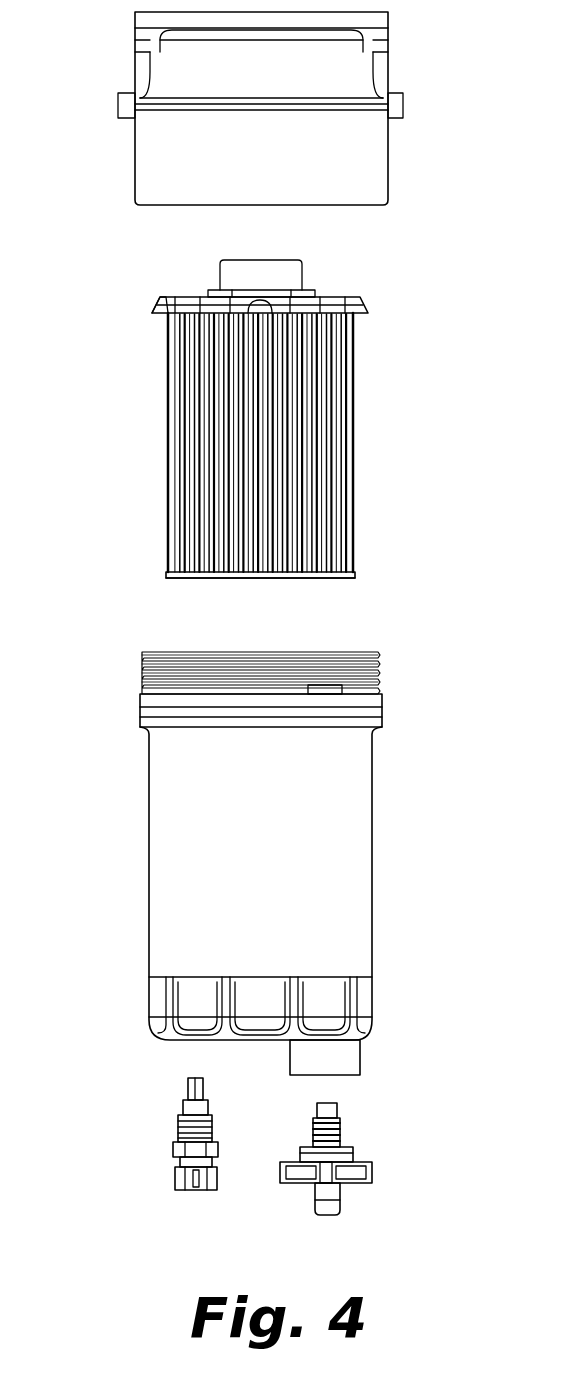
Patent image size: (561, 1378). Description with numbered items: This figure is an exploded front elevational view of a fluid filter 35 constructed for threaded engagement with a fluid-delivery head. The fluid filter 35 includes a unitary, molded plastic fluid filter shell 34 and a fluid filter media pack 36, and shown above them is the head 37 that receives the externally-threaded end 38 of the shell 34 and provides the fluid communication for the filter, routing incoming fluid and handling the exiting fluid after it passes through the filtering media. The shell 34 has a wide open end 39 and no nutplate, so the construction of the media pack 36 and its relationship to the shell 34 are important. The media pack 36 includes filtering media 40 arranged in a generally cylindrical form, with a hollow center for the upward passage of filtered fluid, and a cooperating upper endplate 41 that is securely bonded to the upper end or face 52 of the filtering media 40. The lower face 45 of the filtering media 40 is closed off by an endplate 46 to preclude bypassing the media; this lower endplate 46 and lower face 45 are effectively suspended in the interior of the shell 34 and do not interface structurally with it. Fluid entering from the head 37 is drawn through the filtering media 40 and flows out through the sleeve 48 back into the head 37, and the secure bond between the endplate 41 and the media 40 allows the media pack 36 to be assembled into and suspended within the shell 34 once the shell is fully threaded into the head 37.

The fluid filter shell 34 is at (289, 849).
The fluid filter 35 is at (108, 585).
The fluid filter media pack 36 is at (263, 436).
The head 37 is at (367, 144).
The externally-threaded end 38 is at (380, 670).
The open end 39 is at (190, 644).
The filtering media 40 is at (310, 432).
The upper endplate 41 is at (345, 298).
The lower face 45 is at (353, 568).
The endplate 46 is at (325, 578).
The sleeve 48 is at (290, 277).
The upper end or face 52 is at (173, 318).